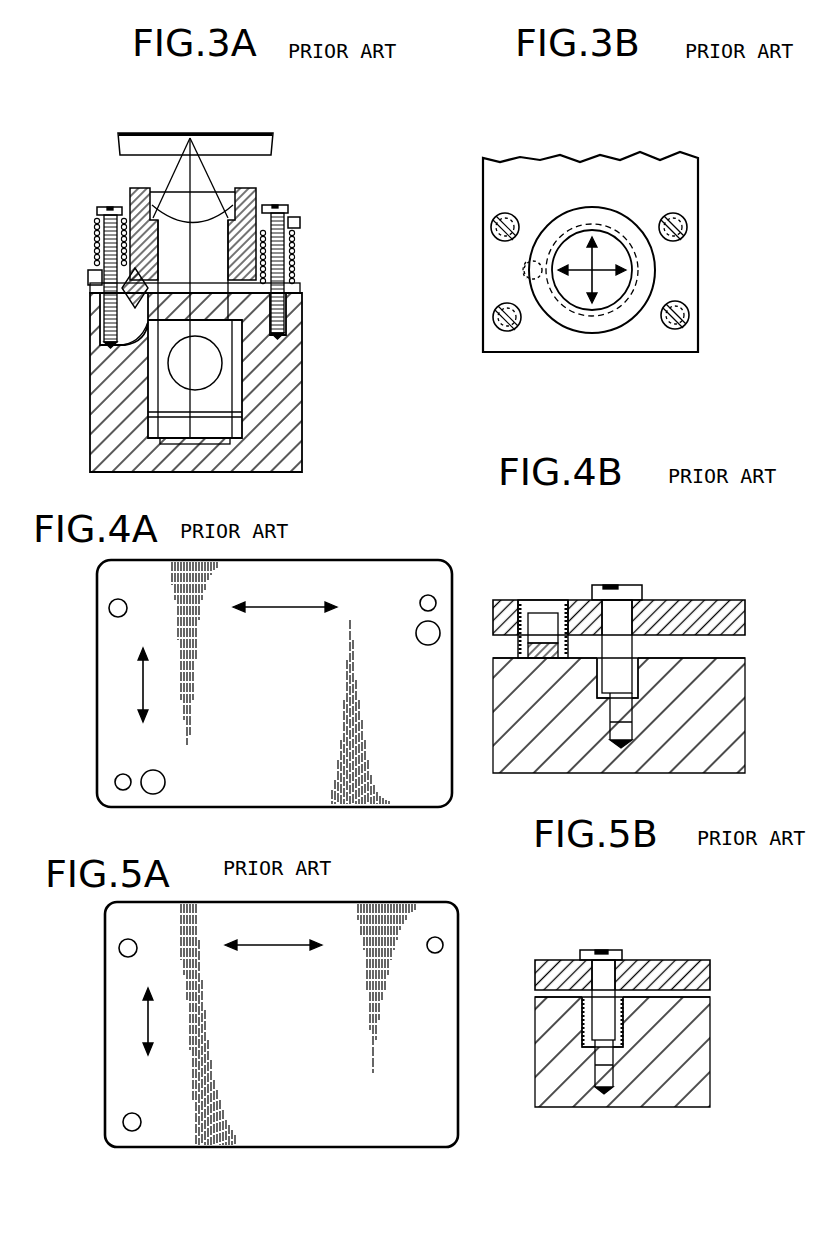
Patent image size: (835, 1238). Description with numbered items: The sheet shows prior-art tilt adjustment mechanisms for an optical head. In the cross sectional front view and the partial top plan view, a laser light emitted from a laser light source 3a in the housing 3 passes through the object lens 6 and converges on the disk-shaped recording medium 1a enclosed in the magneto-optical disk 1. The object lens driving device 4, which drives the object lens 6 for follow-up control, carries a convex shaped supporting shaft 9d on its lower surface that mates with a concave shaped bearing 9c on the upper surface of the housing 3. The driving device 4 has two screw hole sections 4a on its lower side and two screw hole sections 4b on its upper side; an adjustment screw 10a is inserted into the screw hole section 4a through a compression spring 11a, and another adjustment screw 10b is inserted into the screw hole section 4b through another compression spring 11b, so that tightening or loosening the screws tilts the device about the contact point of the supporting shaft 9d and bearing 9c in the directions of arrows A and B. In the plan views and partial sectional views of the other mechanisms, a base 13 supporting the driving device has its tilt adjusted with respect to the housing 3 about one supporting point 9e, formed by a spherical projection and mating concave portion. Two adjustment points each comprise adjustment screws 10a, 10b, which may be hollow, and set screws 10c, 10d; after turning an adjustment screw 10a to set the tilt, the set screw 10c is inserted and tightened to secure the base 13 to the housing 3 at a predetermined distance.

In FIG. 3A, the magneto-optical disk 1 is at (150, 150).
In FIG. 3A, the disk-shaped recording medium 1a is at (270, 133).
In FIG. 3A, the housing 3 is at (284, 404).
In FIG. 4B, the housing 3 is at (734, 683).
In FIG. 5B, the housing 3 is at (680, 1033).
In FIG. 3A, the laser light source 3a is at (235, 371).
In FIG. 3A, the object lens driving device 4 is at (258, 193).
In FIG. 3B, the object lens driving device 4 is at (618, 322).
In FIG. 3A, the screw hole section 4a is at (90, 280).
In FIG. 3B, the screw hole section 4a is at (494, 216).
In FIG. 3A, the screw hole section 4b is at (300, 226).
In FIG. 3B, the screw hole section 4b is at (685, 240).
In FIG. 3A, the object lens 6 is at (237, 197).
In FIG. 3B, the object lens 6 is at (578, 302).
In FIG. 3A, the concave shaped bearing 9c is at (120, 337).
In FIG. 3B, the concave shaped bearing 9c is at (524, 281).
In FIG. 3A, the convex shaped supporting shaft 9d is at (122, 300).
In FIG. 3B, the convex shaped supporting shaft 9d is at (524, 275).
In FIG. 4A, the supporting point 9e is at (112, 613).
In FIG. 5A, the supporting point 9e is at (119, 946).
In FIG. 3A, the adjustment screw 10a is at (103, 207).
In FIG. 3B, the adjustment screw 10a is at (498, 238).
In FIG. 4A, the adjustment screw 10a is at (116, 778).
In FIG. 4B, the adjustment screw 10a is at (560, 600).
In FIG. 5A, the adjustment screw 10a is at (129, 1130).
In FIG. 5B, the adjustment screw 10a is at (640, 970).
In FIG. 3B, the adjustment screw 10b is at (688, 206).
In FIG. 4A, the adjustment screw 10b is at (433, 598).
In FIG. 5A, the adjustment screw 10b is at (441, 941).
In FIG. 4A, the set screw 10c is at (152, 790).
In FIG. 4B, the set screw 10c is at (626, 588).
In FIG. 5A, the set screw 10c is at (138, 1129).
In FIG. 5B, the set screw 10c is at (610, 950).
In FIG. 4A, the set screw 10d is at (435, 642).
In FIG. 5A, the set screw 10d is at (441, 950).
In FIG. 3A, the compression spring 11a is at (94, 245).
In FIG. 3A, the compression spring 11b is at (295, 262).
In FIG. 4A, the base 13 is at (127, 590).
In FIG. 4B, the base 13 is at (686, 604).
In FIG. 5A, the base 13 is at (118, 1010).
In FIG. 5B, the base 13 is at (690, 970).